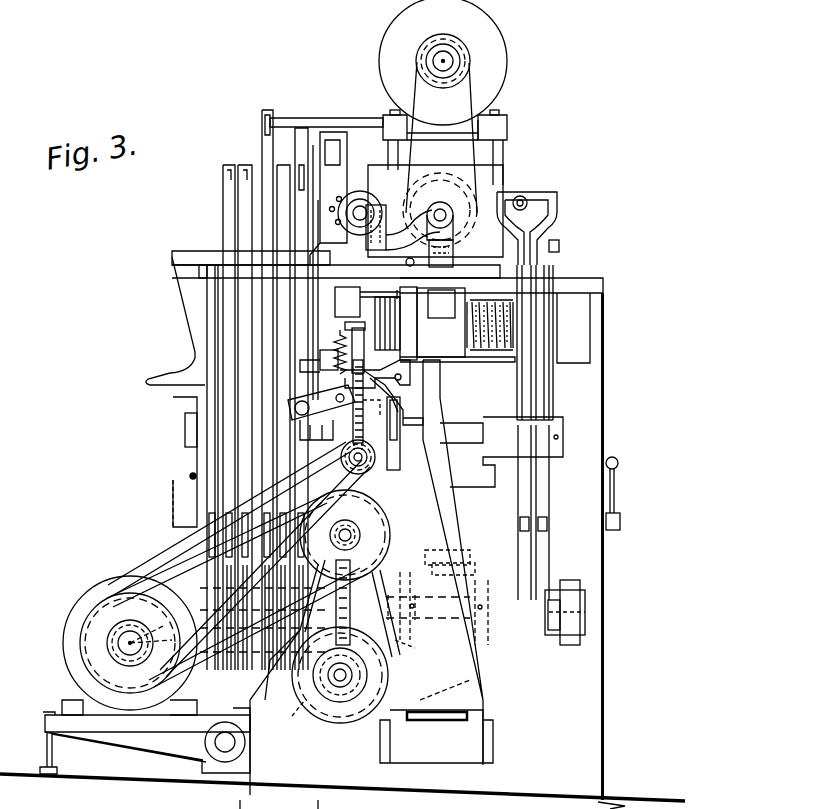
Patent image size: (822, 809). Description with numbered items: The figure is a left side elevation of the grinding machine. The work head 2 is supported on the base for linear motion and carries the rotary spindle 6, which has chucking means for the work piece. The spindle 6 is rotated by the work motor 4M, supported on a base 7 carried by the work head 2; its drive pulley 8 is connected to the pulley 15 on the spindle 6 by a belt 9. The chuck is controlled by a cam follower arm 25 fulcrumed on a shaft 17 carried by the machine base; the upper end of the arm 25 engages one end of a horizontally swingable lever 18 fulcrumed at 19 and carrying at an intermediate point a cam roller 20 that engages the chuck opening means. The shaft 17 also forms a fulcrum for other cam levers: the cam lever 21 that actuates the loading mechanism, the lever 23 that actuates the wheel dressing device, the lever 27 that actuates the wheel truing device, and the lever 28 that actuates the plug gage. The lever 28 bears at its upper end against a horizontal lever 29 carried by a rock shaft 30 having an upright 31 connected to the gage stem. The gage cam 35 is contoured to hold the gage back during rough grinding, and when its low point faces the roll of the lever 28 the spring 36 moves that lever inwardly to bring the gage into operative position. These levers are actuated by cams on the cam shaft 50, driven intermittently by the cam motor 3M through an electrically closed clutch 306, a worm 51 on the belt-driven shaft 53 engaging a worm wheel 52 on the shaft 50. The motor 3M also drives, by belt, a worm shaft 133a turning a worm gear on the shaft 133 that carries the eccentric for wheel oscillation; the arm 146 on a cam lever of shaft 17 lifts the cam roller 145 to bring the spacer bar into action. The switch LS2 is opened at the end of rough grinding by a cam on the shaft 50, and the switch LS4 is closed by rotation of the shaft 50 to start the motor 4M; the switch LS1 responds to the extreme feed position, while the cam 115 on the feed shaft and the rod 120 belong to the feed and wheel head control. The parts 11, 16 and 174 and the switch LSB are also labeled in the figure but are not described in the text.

The work head 2 is at (506, 170).
The rotary spindle 6 is at (438, 200).
The base 7 is at (503, 118).
The drive pulley 8 is at (470, 66).
The belt 9 is at (412, 90).
The frame member 11 is at (193, 401).
The pulley 15 is at (460, 198).
The guide rod 16 is at (548, 257).
The shaft 17 is at (462, 432).
The horizontally swingable lever 18 is at (560, 243).
The fulcrum 19 is at (378, 220).
The cam roller 20 is at (432, 220).
The cam lever 21 is at (517, 377).
The lever 23 is at (310, 160).
The cam follower arm 25 is at (262, 145).
The lever 27 is at (223, 228).
The lever 28 is at (200, 342).
The horizontal lever 29 is at (199, 272).
The rock shaft 30 is at (413, 238).
The upright 31 is at (455, 264).
The cam 35 is at (238, 564).
The spring 36 is at (193, 477).
The cam shaft 50 is at (436, 612).
The worm 51 is at (365, 678).
The worm wheel 52 is at (369, 602).
The belt-driven shaft 53 is at (392, 534).
The cam 115 is at (415, 648).
The rod 120 is at (255, 802).
The shaft 133 is at (405, 440).
The worm shaft 133a is at (405, 468).
The cam roller 145 is at (295, 405).
The arm 146 is at (352, 466).
The base plate 174 is at (332, 802).
The electrically closed clutch 306 is at (283, 727).
The cam motor 3M is at (145, 675).
The work motor 4M is at (443, 62).
The switch LS1 is at (347, 302).
The limit switch LSB is at (441, 322).
The switch LS2 is at (447, 557).
The switch LS4 is at (453, 569).